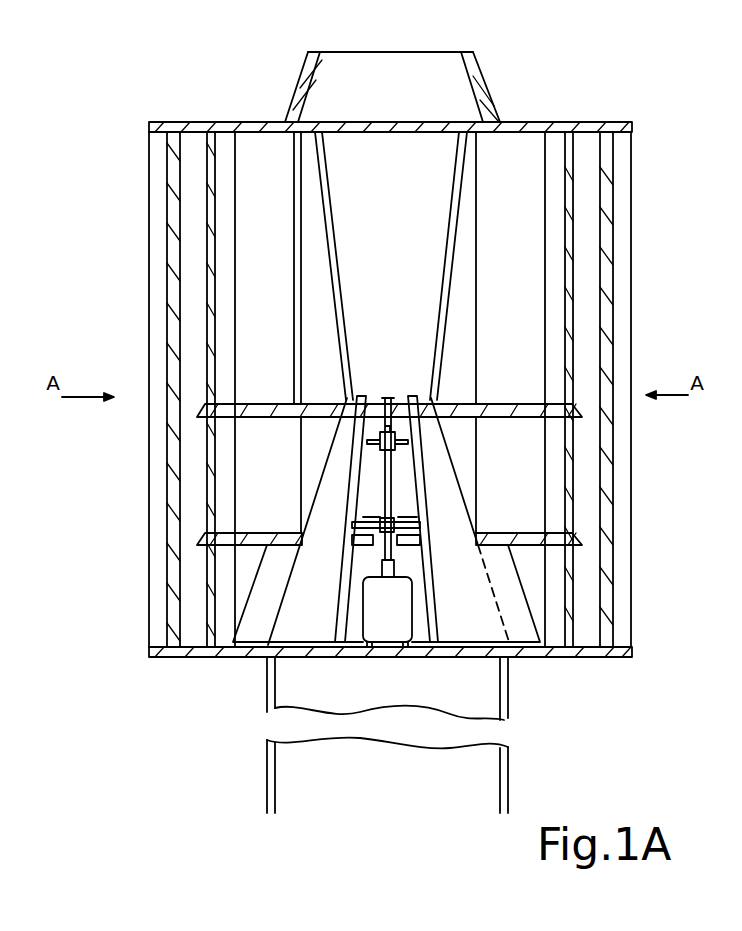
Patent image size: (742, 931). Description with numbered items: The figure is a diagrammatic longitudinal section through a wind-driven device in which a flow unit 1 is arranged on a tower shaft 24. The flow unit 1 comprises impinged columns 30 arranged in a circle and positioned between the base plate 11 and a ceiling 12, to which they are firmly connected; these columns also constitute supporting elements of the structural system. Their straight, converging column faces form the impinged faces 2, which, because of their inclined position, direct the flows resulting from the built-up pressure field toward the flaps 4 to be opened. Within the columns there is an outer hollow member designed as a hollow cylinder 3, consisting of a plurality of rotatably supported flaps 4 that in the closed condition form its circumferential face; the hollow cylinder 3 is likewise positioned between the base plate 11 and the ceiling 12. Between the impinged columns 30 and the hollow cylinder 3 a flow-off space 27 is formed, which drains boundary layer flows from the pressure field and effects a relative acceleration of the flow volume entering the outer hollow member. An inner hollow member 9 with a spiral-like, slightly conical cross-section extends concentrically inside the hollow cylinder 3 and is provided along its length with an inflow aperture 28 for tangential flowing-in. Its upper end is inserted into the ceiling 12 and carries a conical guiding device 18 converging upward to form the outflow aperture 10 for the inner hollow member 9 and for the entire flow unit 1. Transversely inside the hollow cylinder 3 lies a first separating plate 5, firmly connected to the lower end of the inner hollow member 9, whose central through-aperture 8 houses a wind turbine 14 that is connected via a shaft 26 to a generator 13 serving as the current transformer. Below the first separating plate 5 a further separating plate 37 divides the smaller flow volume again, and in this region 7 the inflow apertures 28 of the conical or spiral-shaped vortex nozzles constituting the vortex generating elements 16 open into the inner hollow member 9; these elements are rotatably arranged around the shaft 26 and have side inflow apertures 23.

The flow unit 1 is at (148, 225).
The impinged faces 2 is at (158, 265).
The hollow cylinder 3 is at (568, 210).
The flaps 4 is at (568, 266).
The first separating plate 5 is at (198, 415).
The region 7 is at (520, 445).
The through-aperture 8 is at (408, 433).
The inner hollow member 9 is at (430, 153).
The outflow aperture 10 is at (400, 52).
The base plate 11 is at (222, 645).
The ceiling 12 is at (535, 122).
The generator 13 is at (365, 652).
The wind turbine 14 is at (303, 396).
The vortex generating elements 16 is at (320, 572).
The conical guiding device 18 is at (297, 105).
The side inflow apertures 23 is at (262, 600).
The tower shaft 24 is at (510, 780).
The shaft 26 is at (420, 518).
The flow-off space 27 is at (192, 330).
The inflow aperture 28 is at (312, 204).
The impinged columns 30 is at (172, 193).
The further separating plate 37 is at (583, 537).